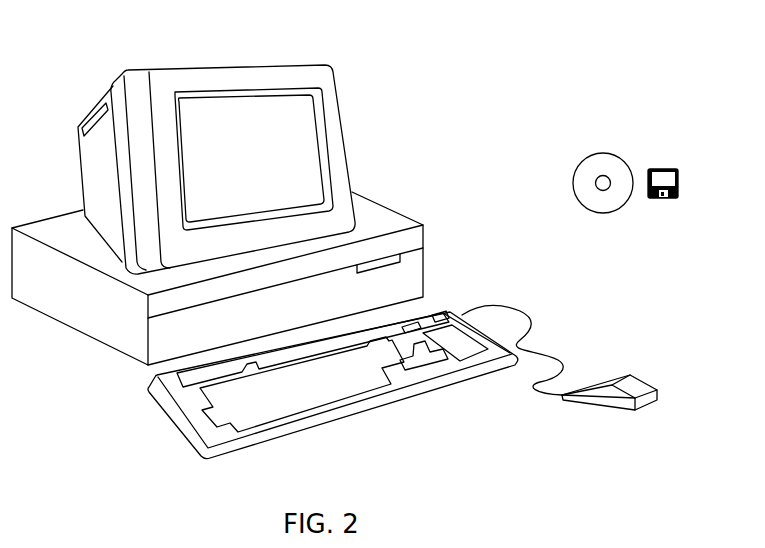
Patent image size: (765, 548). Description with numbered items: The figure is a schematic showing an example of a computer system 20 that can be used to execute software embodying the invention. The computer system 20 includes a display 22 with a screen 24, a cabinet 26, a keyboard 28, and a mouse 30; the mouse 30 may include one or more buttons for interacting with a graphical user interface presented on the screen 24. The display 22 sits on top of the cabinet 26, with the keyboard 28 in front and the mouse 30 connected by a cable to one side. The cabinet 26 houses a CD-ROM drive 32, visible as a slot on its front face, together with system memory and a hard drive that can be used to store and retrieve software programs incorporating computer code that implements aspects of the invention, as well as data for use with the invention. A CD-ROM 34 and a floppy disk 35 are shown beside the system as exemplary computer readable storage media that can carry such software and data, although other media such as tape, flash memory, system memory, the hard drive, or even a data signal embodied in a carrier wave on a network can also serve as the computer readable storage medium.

The computer system 20 is at (526, 38).
The display 22 is at (348, 168).
The screen 24 is at (317, 117).
The cabinet 26 is at (113, 350).
The keyboard 28 is at (337, 420).
The mouse 30 is at (648, 378).
The CD-ROM drive 32 is at (402, 257).
The CD-ROM 34 is at (596, 145).
The floppy disk 35 is at (662, 162).